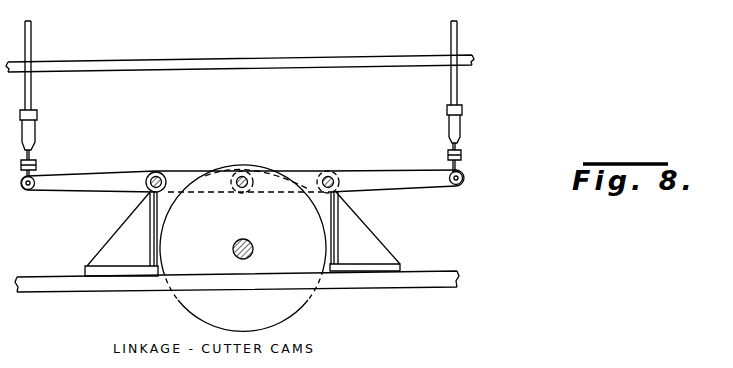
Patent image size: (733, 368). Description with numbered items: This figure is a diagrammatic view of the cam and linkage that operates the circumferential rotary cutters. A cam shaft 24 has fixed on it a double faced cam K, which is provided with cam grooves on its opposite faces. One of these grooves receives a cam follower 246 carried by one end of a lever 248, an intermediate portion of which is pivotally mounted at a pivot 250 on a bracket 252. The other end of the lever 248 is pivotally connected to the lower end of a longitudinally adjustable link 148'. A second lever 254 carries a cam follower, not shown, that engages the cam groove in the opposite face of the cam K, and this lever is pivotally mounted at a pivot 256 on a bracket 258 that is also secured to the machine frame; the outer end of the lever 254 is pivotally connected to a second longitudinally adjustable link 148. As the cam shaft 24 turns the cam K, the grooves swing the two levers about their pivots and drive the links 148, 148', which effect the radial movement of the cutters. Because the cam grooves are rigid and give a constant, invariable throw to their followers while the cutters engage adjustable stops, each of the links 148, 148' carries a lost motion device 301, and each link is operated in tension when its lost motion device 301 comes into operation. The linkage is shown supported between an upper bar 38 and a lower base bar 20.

The upper frame bar 38 is at (308, 60).
The longitudinally adjustable link 148 is at (50, 65).
The longitudinally adjustable link 148' is at (480, 63).
The lost motion device 301 is at (37, 127).
The second lever 254 is at (108, 176).
The pivot 256 is at (159, 176).
The cam follower 246 is at (247, 176).
The lever 248 is at (312, 176).
The pivot 250 is at (336, 176).
The bracket 258 is at (126, 229).
The bracket 252 is at (369, 228).
The cam K is at (186, 297).
The cam shaft 24 is at (242, 239).
The base frame bar 20 is at (439, 270).